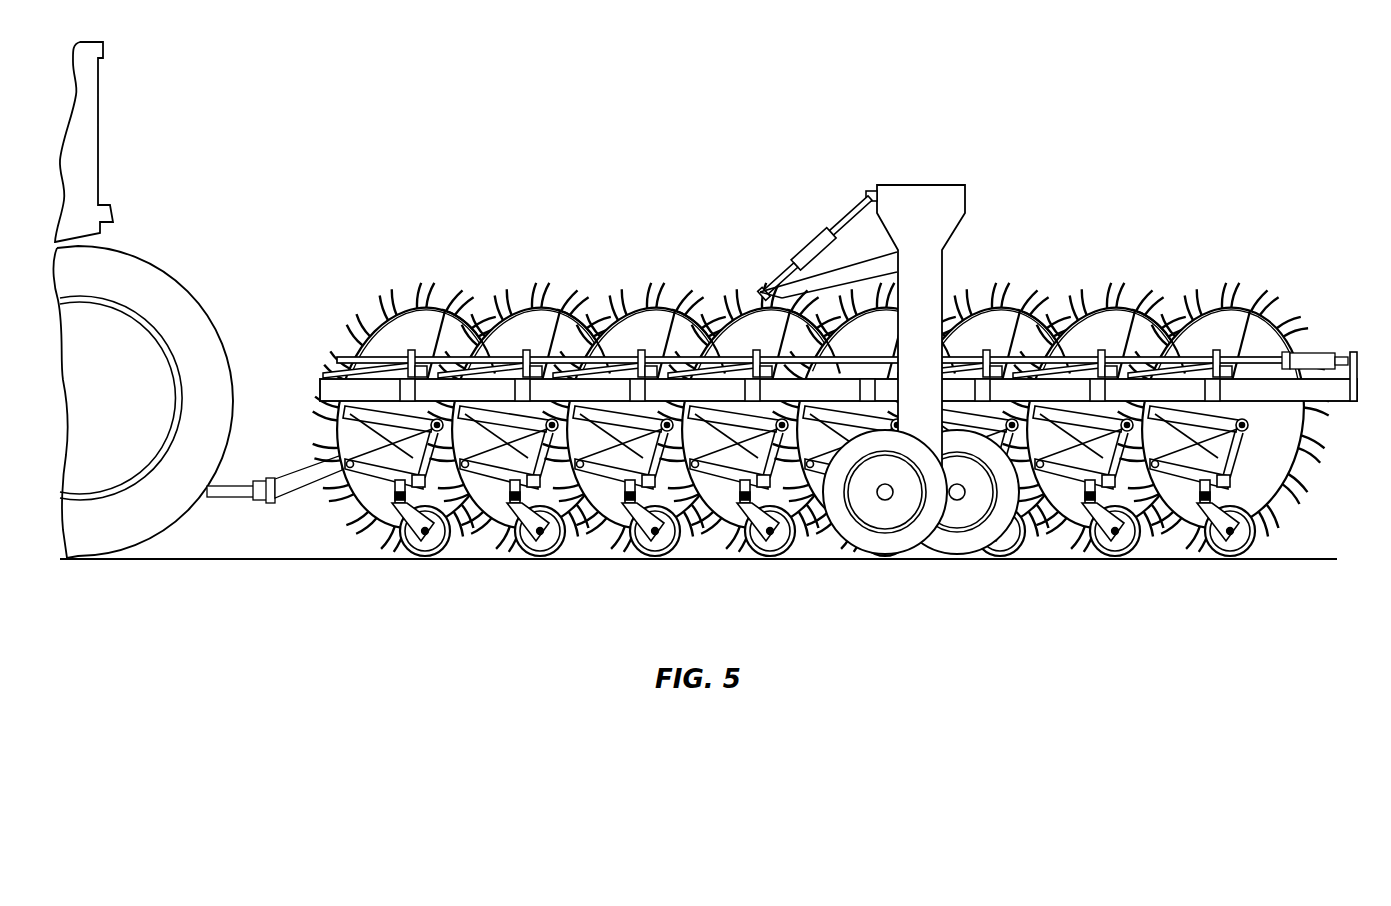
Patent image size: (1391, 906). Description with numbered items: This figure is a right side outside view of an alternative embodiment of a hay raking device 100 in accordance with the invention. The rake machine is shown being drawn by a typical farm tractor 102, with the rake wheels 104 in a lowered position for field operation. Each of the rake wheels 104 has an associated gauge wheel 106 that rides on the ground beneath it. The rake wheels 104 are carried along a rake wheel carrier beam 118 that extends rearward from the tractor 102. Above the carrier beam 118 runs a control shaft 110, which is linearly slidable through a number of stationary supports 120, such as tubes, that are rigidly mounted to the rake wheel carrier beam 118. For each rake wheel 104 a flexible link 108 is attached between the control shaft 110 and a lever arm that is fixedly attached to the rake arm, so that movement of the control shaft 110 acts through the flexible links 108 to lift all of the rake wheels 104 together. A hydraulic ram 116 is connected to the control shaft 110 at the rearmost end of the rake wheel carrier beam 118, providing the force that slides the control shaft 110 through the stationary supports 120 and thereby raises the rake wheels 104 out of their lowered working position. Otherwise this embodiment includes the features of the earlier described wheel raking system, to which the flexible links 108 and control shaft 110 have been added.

The hay raking device 100 is at (556, 158).
The farm tractor 102 is at (105, 343).
The rake wheels 104 is at (640, 330).
The gauge wheels 106 is at (432, 548).
The flexible link 108 is at (1205, 355).
The control shaft 110 is at (1270, 355).
The hydraulic ram 116 is at (1337, 353).
The rake wheel carrier beam 118 is at (1330, 395).
The stationary supports 120 is at (1103, 355).